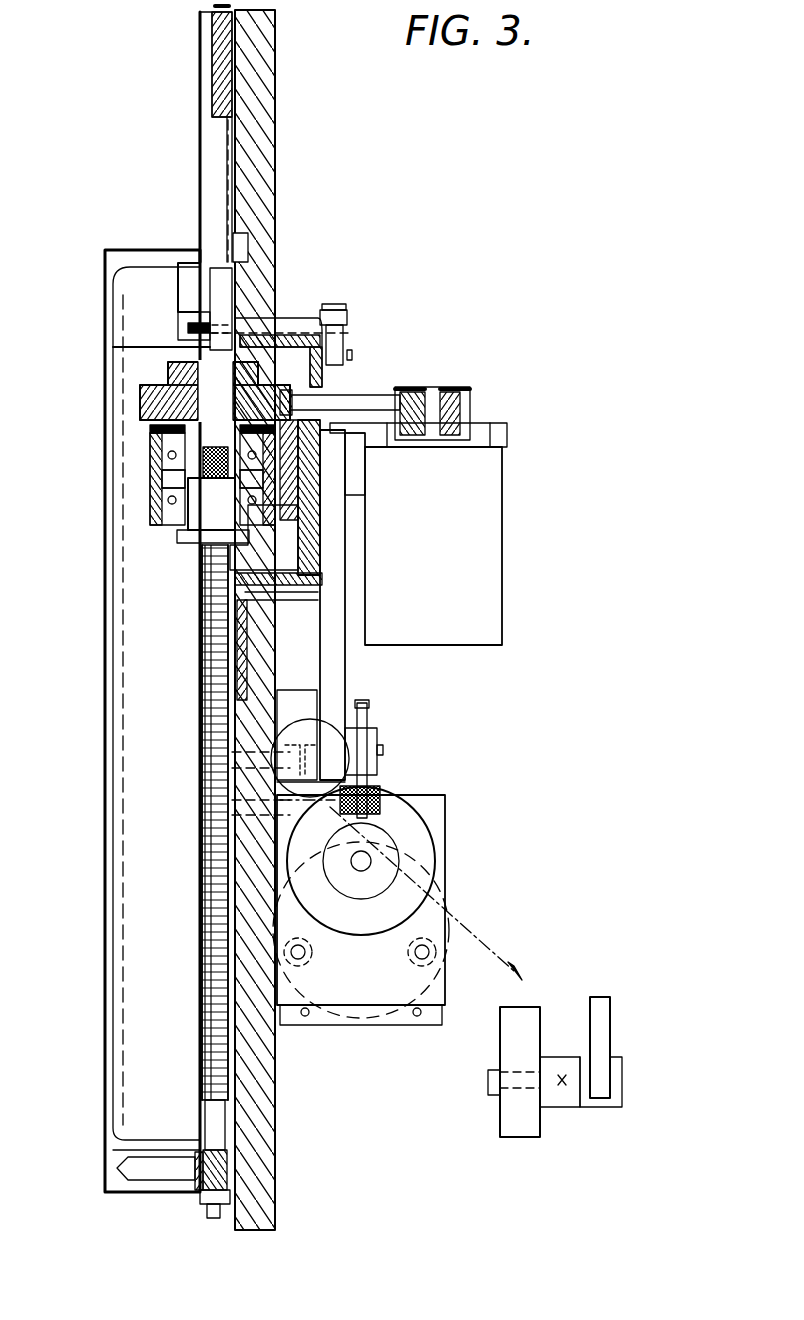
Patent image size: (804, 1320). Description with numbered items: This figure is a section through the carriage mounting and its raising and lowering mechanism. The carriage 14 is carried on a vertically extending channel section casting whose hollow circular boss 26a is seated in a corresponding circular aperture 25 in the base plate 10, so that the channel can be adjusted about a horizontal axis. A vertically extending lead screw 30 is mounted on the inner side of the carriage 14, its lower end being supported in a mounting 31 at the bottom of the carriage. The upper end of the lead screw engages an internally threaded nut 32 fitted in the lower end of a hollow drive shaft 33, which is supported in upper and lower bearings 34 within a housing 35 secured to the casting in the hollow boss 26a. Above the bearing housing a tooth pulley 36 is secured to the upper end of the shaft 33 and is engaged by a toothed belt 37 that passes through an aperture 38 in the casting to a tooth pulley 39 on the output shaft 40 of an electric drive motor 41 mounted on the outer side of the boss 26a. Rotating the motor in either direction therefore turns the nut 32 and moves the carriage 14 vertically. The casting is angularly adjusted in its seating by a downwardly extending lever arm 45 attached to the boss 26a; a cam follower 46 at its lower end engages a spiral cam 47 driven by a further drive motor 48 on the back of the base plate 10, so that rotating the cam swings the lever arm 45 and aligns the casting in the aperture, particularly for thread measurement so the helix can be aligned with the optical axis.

The base plate 10 is at (258, 155).
The carriage 14 is at (110, 1045).
The circular aperture 25 is at (215, 262).
The hollow circular boss 26a is at (318, 537).
The lead screw 30 is at (205, 890).
The mounting 31 is at (208, 1175).
The internally threaded nut 32 is at (205, 530).
The hollow drive shaft 33 is at (150, 435).
The bearings 34 is at (150, 460).
The housing 35 is at (150, 478).
The tooth pulley 36 is at (148, 392).
The toothed belt 37 is at (362, 400).
The aperture 38 is at (322, 380).
The tooth pulley 39 is at (470, 408).
The output shaft 40 is at (470, 442).
The electric drive motor 41 is at (495, 540).
The lever arm 45 is at (342, 670).
The cam follower 46 is at (370, 795).
The spiral cam 47 is at (425, 860).
The drive motor 48 is at (358, 1020).